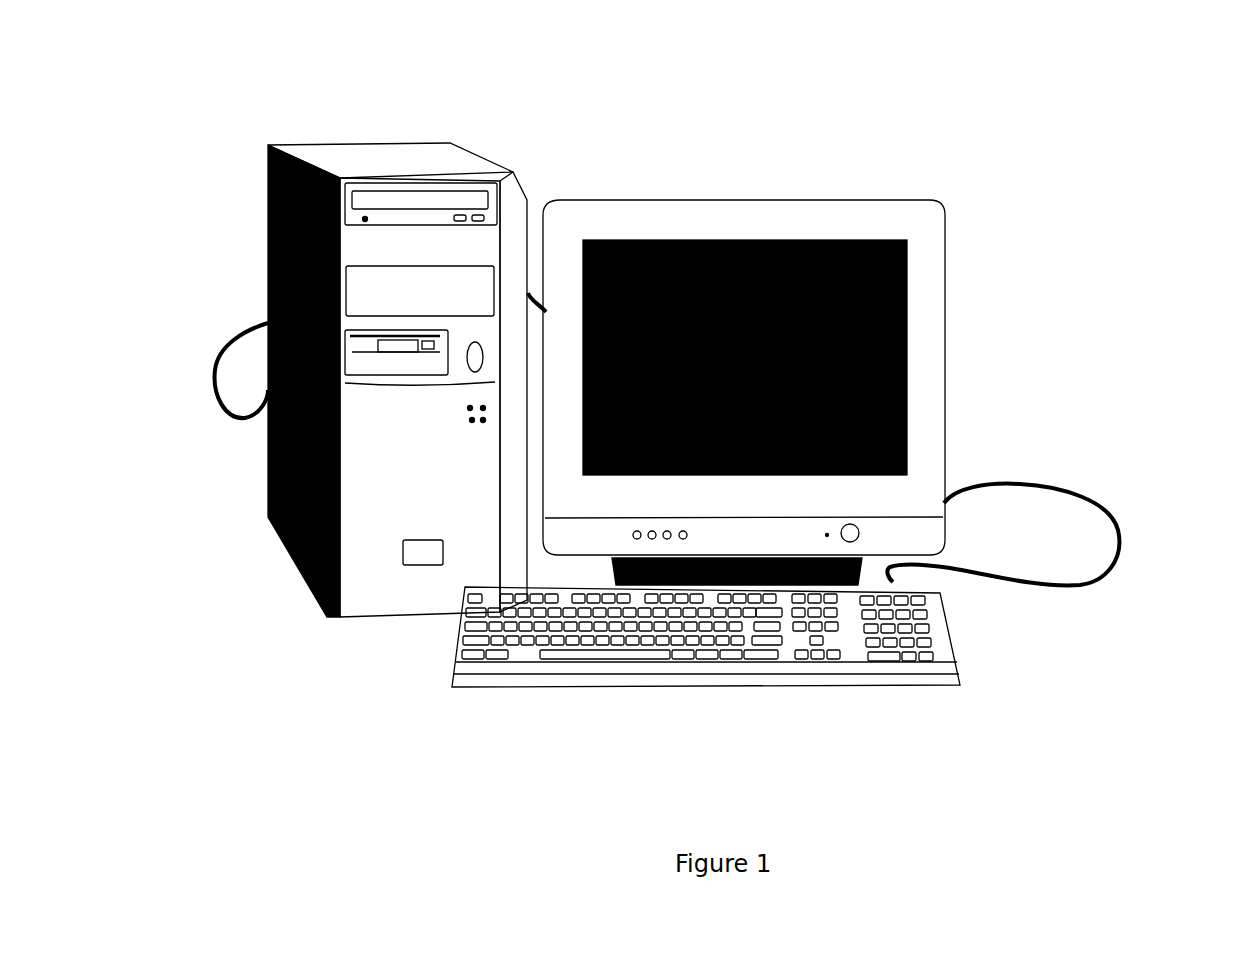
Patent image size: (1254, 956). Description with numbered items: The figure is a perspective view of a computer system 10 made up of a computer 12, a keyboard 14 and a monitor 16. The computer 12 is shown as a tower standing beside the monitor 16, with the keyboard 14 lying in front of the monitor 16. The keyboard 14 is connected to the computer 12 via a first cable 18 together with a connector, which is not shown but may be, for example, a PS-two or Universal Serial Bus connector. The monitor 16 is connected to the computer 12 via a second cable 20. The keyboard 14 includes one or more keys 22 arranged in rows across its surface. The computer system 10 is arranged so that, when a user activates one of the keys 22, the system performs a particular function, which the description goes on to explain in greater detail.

The computer system 10 is at (1062, 265).
The computer 12 is at (360, 245).
The keyboard 14 is at (462, 630).
The monitor 16 is at (790, 240).
The first cable 18 is at (1118, 533).
The second cable 20 is at (226, 340).
The keys 22 is at (815, 648).